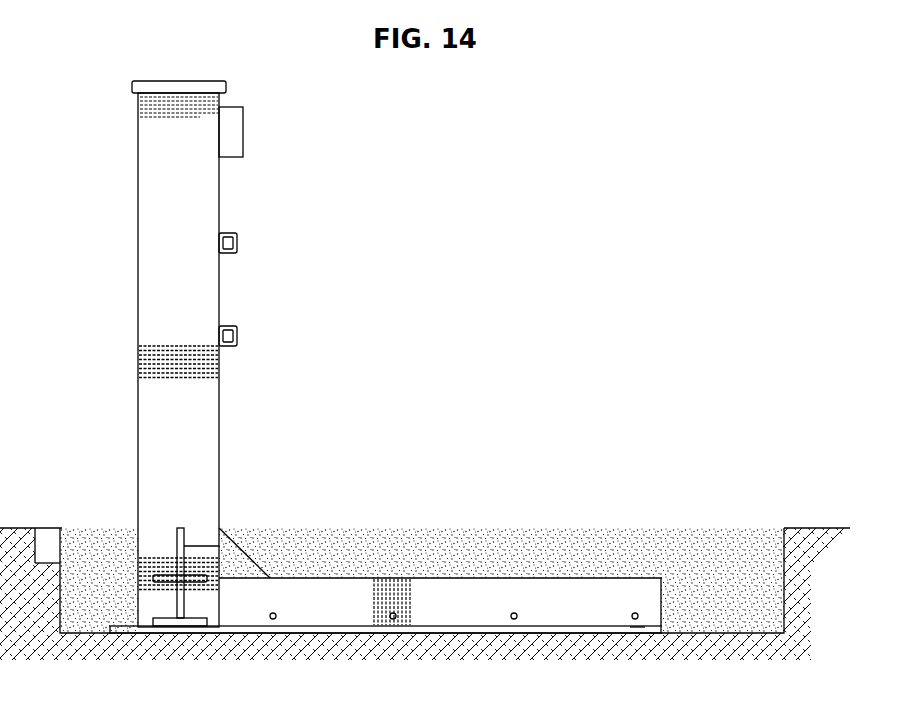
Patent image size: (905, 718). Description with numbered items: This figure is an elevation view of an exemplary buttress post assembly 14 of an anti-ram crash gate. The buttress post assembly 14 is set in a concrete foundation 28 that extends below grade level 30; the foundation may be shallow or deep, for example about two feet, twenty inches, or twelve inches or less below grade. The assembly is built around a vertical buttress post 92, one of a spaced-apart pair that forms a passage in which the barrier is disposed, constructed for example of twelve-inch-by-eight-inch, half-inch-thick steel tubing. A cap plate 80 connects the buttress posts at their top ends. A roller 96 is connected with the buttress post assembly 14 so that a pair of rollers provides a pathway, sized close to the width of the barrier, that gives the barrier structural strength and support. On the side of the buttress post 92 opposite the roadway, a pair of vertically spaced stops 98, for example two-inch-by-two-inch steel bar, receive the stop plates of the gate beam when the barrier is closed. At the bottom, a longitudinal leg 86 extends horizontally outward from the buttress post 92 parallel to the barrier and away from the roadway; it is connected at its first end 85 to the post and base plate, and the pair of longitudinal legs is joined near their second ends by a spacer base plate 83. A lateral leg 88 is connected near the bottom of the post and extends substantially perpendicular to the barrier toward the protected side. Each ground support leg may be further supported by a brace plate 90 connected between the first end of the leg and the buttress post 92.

The buttress post assembly 14 is at (418, 350).
The concrete foundation 28 is at (735, 585).
The grade level 30 is at (36, 528).
The cap plate 80 is at (178, 81).
The spacer base plate 83 is at (645, 631).
The first end 85 is at (242, 612).
The longitudinal leg 86 is at (467, 613).
The lateral leg 88 is at (176, 603).
The brace plate 90 is at (184, 546).
The buttress post 92 is at (150, 256).
The roller 96 is at (243, 136).
The stop 98 is at (232, 326).